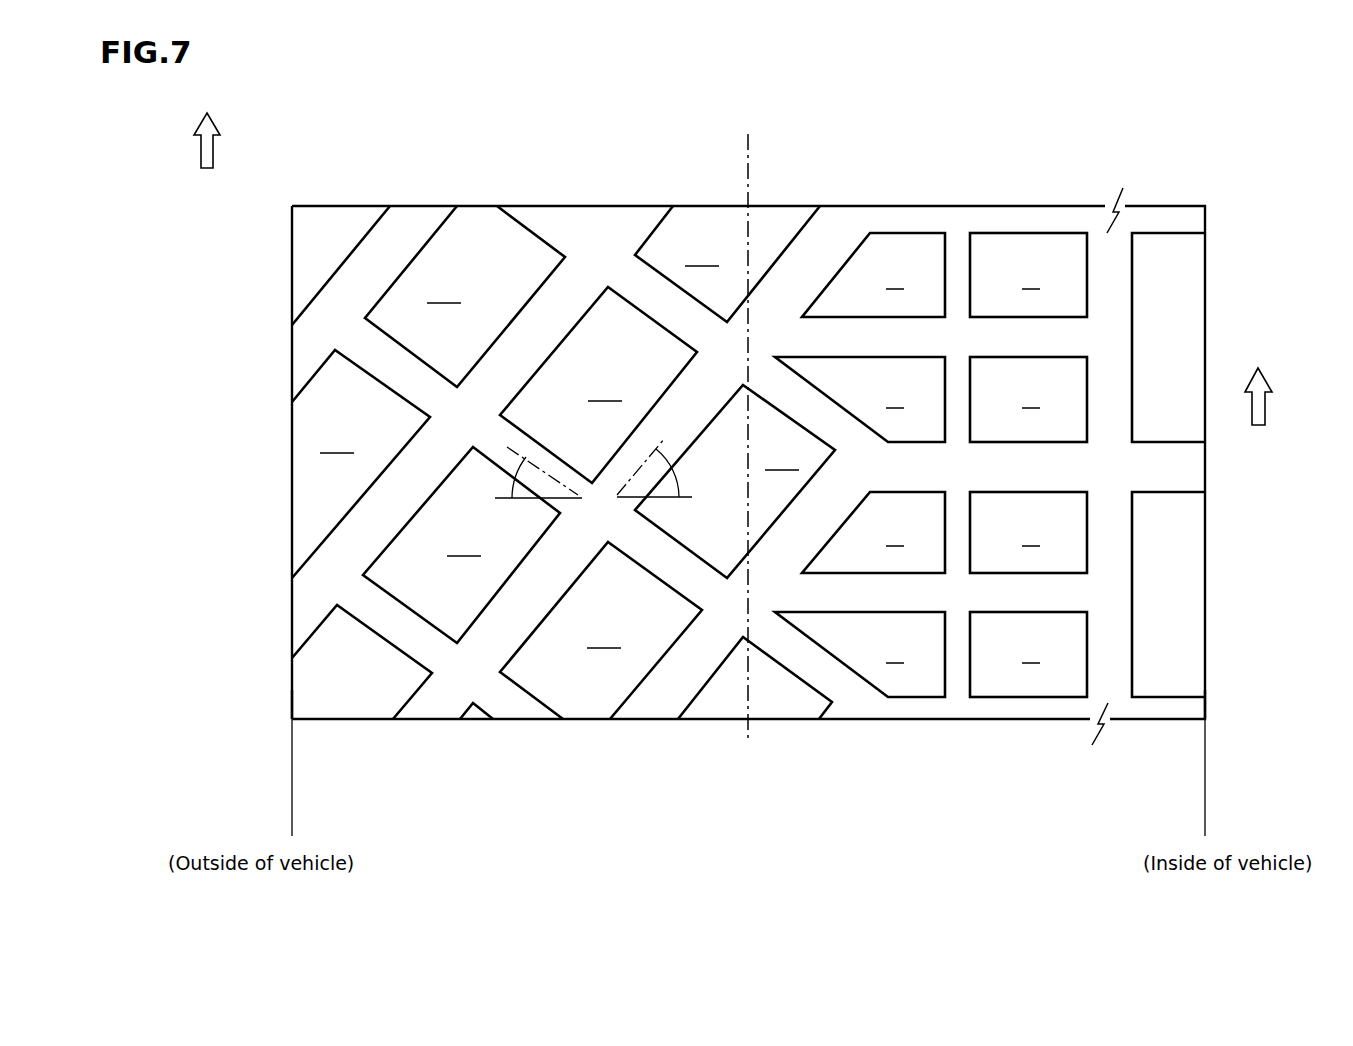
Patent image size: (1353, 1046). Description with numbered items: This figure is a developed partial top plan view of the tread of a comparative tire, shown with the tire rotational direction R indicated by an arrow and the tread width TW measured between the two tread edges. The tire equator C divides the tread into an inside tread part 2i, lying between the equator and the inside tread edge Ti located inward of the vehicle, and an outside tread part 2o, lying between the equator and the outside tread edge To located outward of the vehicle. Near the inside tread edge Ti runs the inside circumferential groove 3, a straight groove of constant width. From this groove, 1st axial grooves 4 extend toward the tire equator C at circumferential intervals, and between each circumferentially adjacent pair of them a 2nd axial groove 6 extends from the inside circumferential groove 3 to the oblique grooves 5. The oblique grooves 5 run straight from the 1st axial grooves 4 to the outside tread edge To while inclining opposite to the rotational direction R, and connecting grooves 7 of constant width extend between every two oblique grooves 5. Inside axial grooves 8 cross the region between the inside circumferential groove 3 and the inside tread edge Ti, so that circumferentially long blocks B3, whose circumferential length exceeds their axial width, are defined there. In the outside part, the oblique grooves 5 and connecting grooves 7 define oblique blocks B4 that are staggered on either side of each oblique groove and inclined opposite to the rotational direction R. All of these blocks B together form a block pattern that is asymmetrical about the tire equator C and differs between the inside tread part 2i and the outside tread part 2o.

The outside tread part 2o is at (297, 153).
The inside tread part 2i is at (752, 153).
The inside circumferential groove 3 is at (1110, 537).
The 1st axial groove 4 is at (1060, 470).
The oblique groove 5 is at (338, 569).
The 2nd axial groove 6 is at (1060, 338).
The connecting groove 7 is at (518, 448).
The inside axial groove 8 is at (1170, 476).
The block B is at (931, 465).
The circumferentially long block B3 is at (1155, 394).
The oblique block B4 is at (563, 462).
The tire equator C is at (748, 423).
The forward rotation direction F is at (207, 128).
The tire rotational direction R is at (1258, 386).
The outside tread edge To is at (291, 699).
The inside tread edge Ti is at (1206, 703).
The tread width TW is at (293, 828).